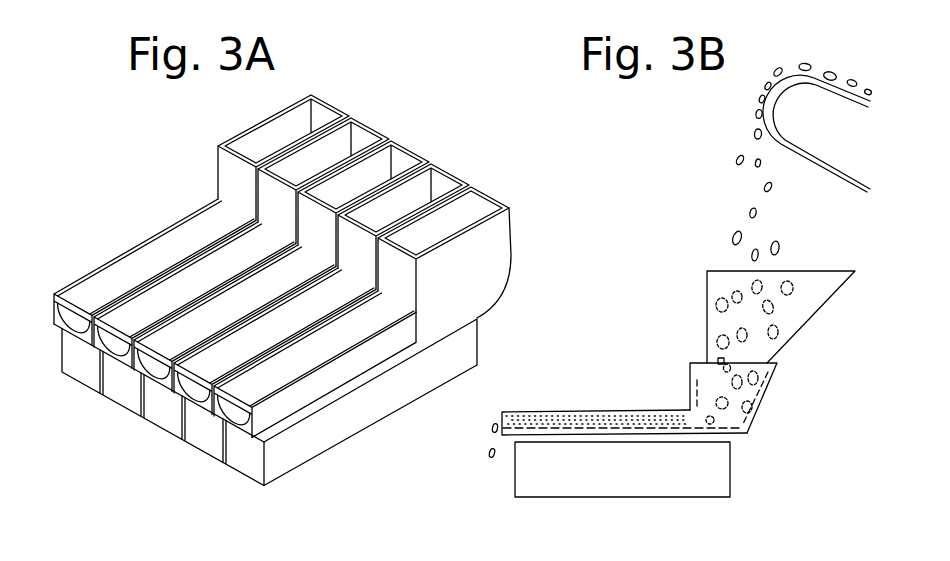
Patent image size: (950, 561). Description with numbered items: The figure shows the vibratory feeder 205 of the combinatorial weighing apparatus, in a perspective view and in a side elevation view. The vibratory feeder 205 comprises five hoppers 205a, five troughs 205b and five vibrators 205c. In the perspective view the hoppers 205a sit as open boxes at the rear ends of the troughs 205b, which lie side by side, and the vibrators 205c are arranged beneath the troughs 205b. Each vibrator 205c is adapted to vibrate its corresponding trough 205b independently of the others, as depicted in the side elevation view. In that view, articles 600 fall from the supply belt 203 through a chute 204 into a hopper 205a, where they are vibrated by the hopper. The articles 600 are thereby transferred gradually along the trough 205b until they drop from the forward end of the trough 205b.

In FIG. 3B, the supply belt 203 is at (798, 97).
In FIG. 3B, the chute 204 is at (812, 300).
In FIG. 3A, the vibratory feeder 205 is at (181, 196).
In FIG. 3A, the hopper 205a is at (362, 135).
In FIG. 3B, the hopper 205a is at (770, 390).
In FIG. 3A, the trough 205b is at (122, 346).
In FIG. 3B, the trough 205b is at (608, 399).
In FIG. 3A, the vibrator 205c is at (78, 375).
In FIG. 3B, the vibrator 205c is at (645, 488).
In FIG. 3B, the articles 600 is at (735, 163).